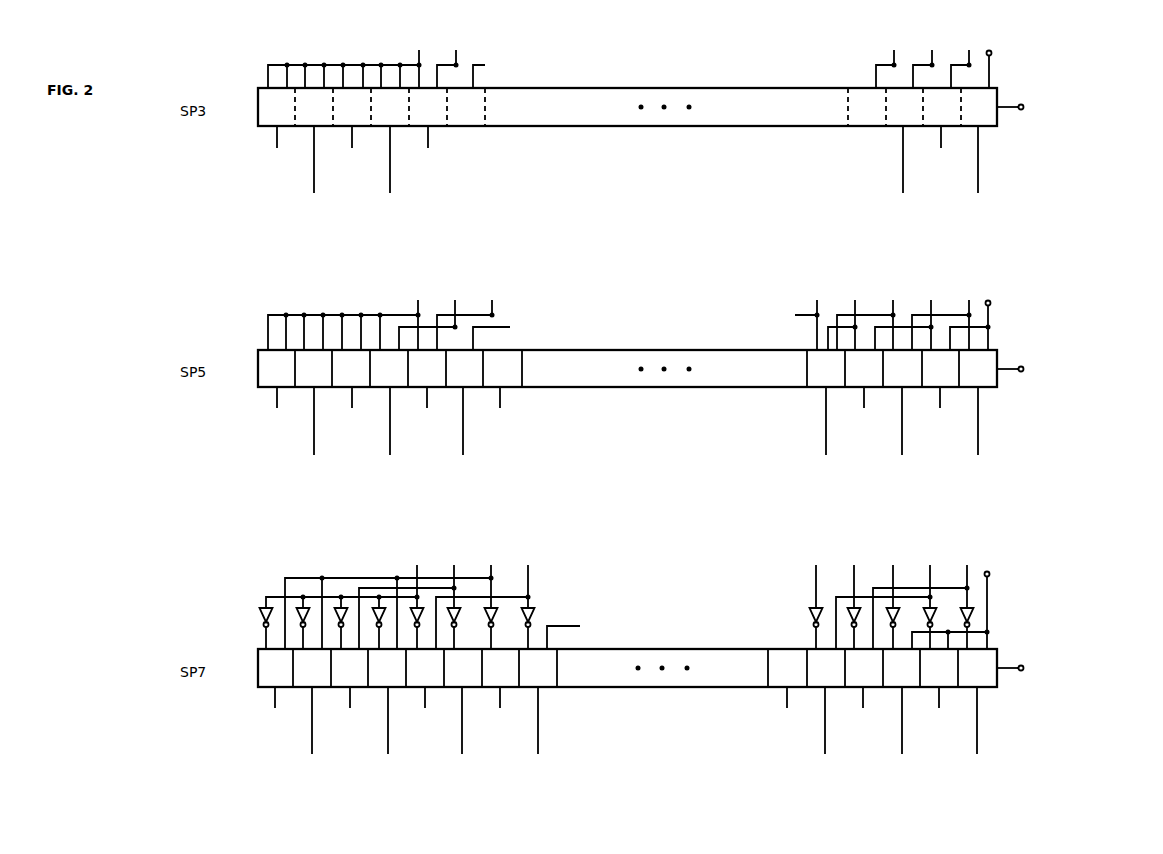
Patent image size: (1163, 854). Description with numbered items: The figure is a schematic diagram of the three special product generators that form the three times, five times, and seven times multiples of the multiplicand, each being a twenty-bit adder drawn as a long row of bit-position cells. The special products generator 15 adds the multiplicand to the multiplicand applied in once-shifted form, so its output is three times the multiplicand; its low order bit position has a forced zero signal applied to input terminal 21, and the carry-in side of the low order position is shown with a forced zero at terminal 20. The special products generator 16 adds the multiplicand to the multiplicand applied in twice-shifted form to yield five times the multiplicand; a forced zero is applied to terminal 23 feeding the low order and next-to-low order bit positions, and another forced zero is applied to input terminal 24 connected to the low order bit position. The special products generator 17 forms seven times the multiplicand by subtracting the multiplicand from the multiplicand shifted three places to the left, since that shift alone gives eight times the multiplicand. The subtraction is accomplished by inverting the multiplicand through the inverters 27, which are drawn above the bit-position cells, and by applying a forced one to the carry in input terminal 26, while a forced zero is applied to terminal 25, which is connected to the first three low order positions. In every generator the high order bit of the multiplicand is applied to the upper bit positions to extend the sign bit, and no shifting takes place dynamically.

The special products generator 15 is at (670, 88).
The special products generator 16 is at (660, 350).
The special products generator 17 is at (675, 649).
The carry-in forced zero input of first adder 20 is at (1021, 110).
The input terminal 21 is at (991, 56).
The terminal 23 is at (990, 306).
The input terminal 24 is at (1021, 372).
The terminal 25 is at (993, 636).
The carry in input terminal 26 is at (1021, 671).
The inverters 27 is at (530, 608).